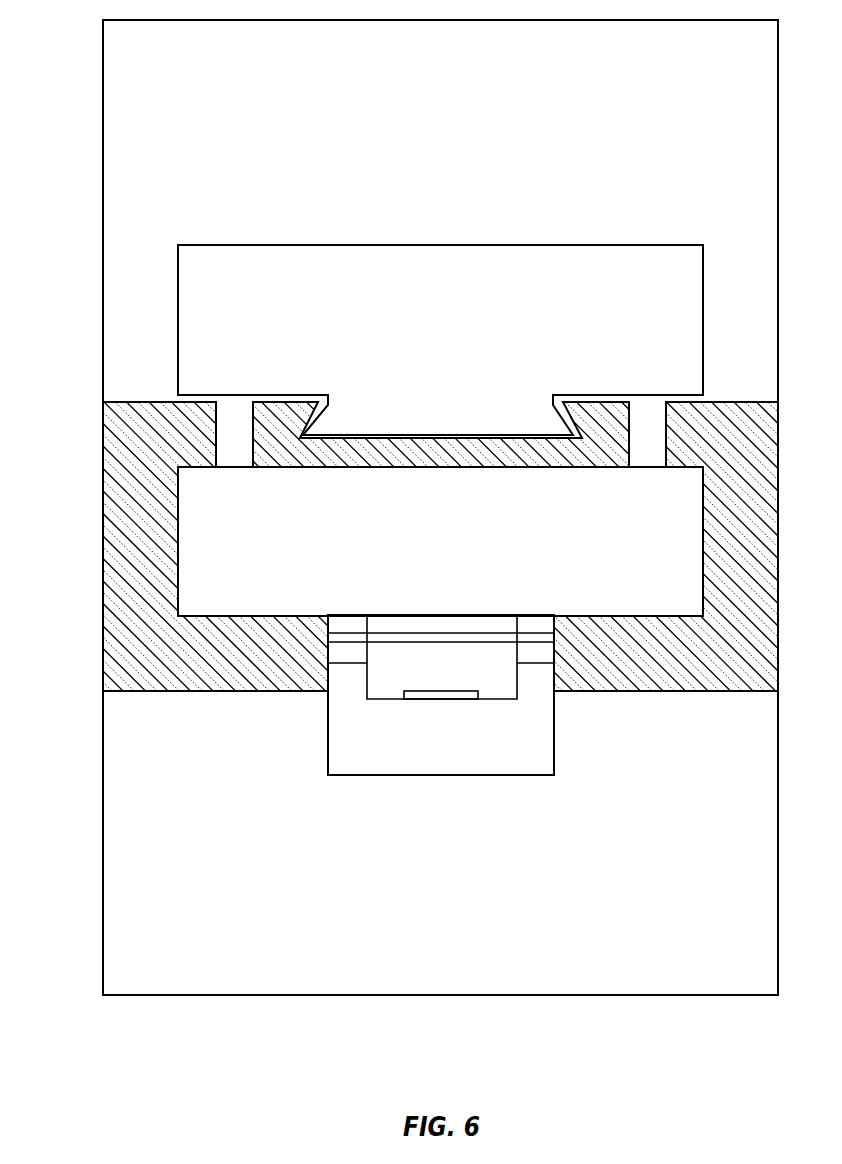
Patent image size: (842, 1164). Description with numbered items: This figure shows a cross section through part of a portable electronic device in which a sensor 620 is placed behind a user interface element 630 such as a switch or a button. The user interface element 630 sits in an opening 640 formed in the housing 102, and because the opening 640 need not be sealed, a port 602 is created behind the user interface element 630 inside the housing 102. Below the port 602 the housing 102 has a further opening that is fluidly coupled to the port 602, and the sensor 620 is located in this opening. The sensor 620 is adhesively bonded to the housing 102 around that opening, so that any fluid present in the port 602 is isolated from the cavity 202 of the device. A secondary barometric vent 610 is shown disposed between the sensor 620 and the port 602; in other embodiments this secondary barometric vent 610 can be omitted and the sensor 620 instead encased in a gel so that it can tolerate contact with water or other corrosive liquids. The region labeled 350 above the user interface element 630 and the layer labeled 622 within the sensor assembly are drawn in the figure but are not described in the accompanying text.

The first substrate / upper body 350 is at (458, 125).
The cavity 202 is at (459, 951).
The user interface element 630 is at (458, 330).
The opening 640 is at (253, 423).
The housing 102 is at (248, 691).
The port 602 is at (459, 538).
The secondary barometric vent 610 is at (398, 643).
The layer / membrane 622 is at (358, 775).
The sensor 620 is at (467, 700).